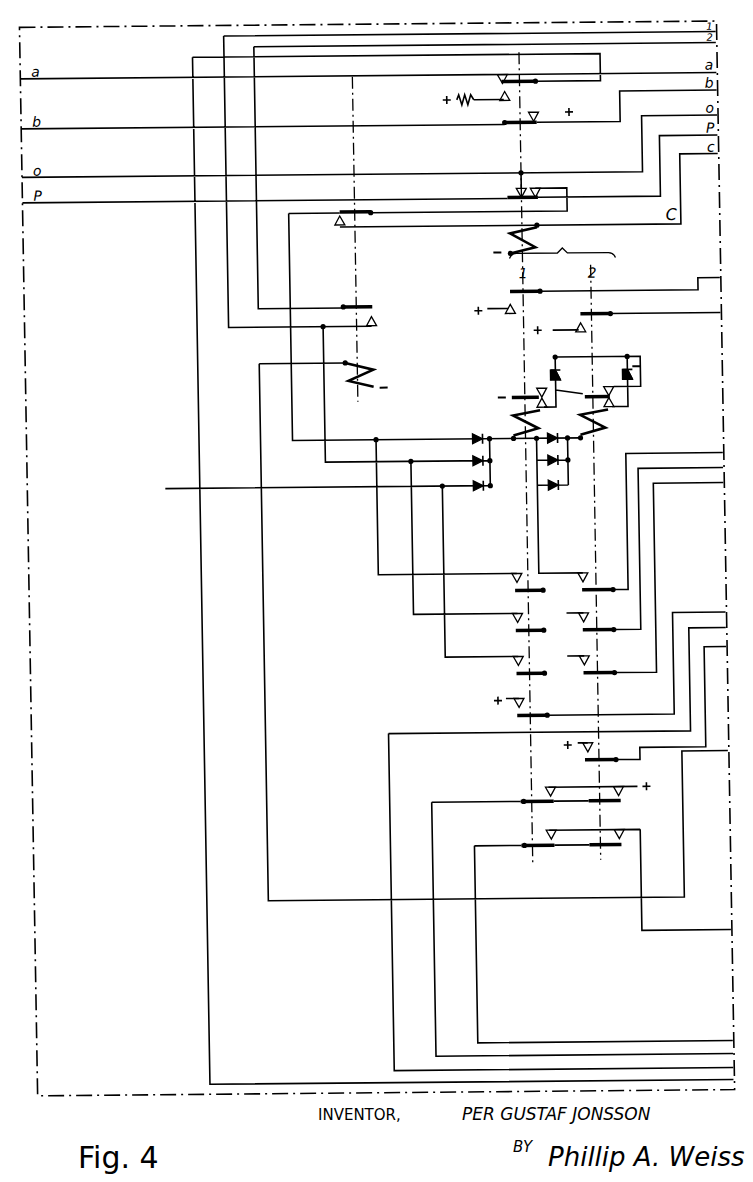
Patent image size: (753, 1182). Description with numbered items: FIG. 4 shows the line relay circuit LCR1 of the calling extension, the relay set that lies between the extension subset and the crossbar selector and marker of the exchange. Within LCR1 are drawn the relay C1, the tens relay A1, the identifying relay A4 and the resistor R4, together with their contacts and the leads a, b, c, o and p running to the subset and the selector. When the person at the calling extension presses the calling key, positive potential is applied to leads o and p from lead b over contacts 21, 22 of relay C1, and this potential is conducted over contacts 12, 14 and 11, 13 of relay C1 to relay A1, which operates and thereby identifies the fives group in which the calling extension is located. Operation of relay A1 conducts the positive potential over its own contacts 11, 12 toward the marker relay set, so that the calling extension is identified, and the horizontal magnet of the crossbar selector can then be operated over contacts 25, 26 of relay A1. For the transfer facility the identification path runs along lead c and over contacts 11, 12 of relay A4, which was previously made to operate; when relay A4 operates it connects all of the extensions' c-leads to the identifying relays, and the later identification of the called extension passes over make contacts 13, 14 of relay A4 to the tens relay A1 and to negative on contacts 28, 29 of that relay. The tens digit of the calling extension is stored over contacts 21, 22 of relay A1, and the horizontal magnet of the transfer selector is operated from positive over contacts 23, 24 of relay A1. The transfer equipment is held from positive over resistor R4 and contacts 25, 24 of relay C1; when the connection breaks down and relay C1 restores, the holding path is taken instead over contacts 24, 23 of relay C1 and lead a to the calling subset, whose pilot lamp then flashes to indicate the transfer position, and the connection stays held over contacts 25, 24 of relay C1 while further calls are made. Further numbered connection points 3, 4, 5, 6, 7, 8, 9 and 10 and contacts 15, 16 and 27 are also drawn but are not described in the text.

The terminal 3 is at (713, 271).
The terminal 4 is at (714, 306).
The terminal 5 is at (716, 446).
The terminal 6 is at (716, 461).
The terminal 7 is at (717, 476).
The terminal 8 is at (719, 606).
The terminal 9 is at (719, 621).
The terminal 10 is at (716, 640).
The relay contact 11 is at (525, 467).
The relay contact 12 is at (549, 553).
The relay contact 13 is at (532, 621).
The relay contact 14 is at (549, 615).
The relay contact 15 is at (642, 942).
The relay contact 16 is at (624, 876).
The relay contact 21 is at (547, 443).
The relay contact 22 is at (561, 462).
The relay contact 23 is at (513, 381).
The relay contact 24 is at (535, 398).
The relay contact 25 is at (509, 208).
The relay contact 26 is at (560, 295).
The relay contact 27 is at (550, 399).
The relay contact 28 is at (540, 376).
The relay contact 29 is at (559, 387).
The tens relay A1 is at (566, 240).
The identification relay A4 is at (353, 230).
The line relay C1 is at (516, 67).
The resistor R4 is at (464, 107).
The line relay circuit LCR1 is at (303, 995).